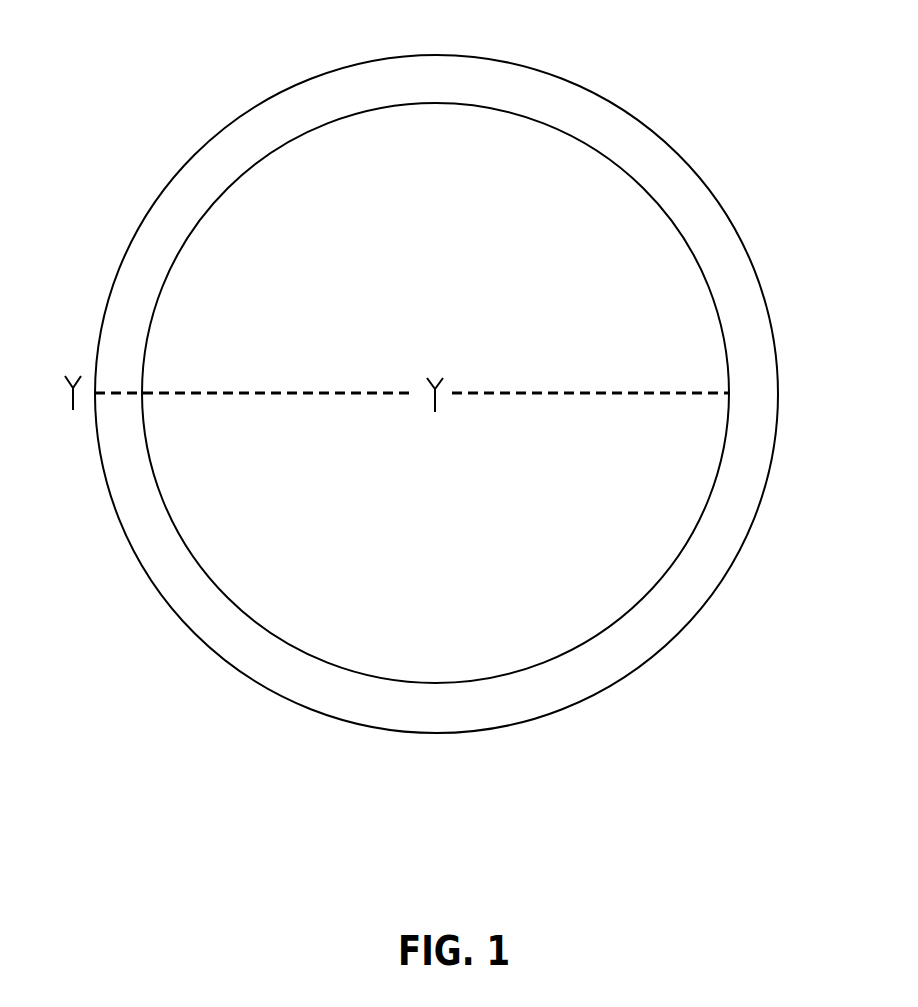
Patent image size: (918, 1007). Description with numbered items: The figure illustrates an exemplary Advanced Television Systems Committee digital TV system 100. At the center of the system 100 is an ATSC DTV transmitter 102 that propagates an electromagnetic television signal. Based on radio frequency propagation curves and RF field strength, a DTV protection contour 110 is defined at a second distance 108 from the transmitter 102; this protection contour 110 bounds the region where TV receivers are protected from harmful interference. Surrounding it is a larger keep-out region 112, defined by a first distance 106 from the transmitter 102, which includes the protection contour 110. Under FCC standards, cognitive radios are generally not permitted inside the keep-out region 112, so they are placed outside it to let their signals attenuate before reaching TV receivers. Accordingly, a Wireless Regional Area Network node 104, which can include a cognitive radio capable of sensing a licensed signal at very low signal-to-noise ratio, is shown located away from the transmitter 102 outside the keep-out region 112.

The ATSC digital TV system 100 is at (197, 111).
The ATSC DTV transmitter 102 is at (432, 364).
The WRAN node 104 is at (74, 454).
The distance d1 106 is at (251, 416).
The distance d2 108 is at (561, 416).
The DTV protection contour 110 is at (597, 140).
The keep-out region 112 is at (539, 62).